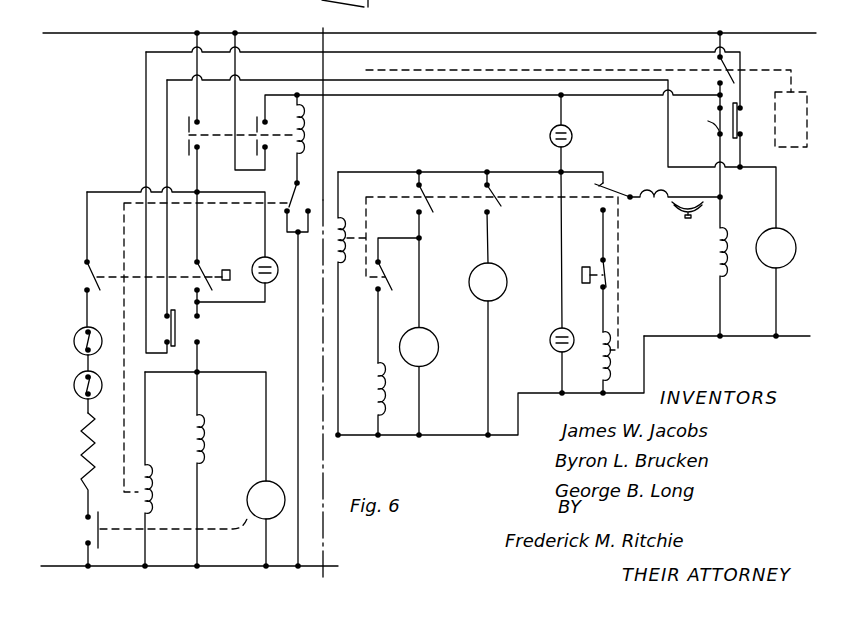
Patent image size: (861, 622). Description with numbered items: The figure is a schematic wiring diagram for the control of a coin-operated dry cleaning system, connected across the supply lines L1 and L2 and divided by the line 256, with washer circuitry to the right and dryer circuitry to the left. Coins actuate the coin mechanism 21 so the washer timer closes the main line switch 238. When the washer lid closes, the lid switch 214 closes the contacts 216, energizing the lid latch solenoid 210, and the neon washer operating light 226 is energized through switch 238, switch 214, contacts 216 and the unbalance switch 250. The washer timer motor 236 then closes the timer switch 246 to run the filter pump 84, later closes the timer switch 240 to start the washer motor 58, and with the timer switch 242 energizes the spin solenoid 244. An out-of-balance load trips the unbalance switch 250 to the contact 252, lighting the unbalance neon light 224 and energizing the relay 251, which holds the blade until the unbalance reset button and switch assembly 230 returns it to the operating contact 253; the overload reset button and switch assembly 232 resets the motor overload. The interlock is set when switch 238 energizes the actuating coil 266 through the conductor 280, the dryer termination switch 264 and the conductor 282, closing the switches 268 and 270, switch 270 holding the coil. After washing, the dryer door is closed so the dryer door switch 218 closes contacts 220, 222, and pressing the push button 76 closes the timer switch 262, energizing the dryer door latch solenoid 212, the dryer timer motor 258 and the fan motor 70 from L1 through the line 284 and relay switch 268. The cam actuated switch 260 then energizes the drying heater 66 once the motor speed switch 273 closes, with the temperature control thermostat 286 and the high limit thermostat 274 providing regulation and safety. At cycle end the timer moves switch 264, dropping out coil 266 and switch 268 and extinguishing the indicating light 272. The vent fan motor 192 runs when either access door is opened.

The supply line L1 is at (777, 31).
The supply line L2 is at (785, 338).
The coin mechanism 21 is at (800, 147).
The washer motor 58 is at (432, 360).
The drying heater 66 is at (82, 418).
The dryer fan motor 70 is at (247, 497).
The push button 76 is at (230, 274).
The filter pump 84 is at (500, 298).
The vent fan motor 192 is at (781, 267).
The lid latch solenoid 210 is at (713, 278).
The dryer door latch solenoid 212 is at (192, 435).
The lid switch 214 is at (738, 118).
The contacts 216 is at (710, 121).
The dryer door switch 218 is at (176, 328).
The contact 220 is at (200, 343).
The contact 222 is at (200, 316).
The unbalance neon light 224 is at (553, 128).
The neon washer operating light 226 is at (553, 352).
The unbalance reset button and switch assembly 230 is at (605, 274).
The overload reset button and switch assembly 232 is at (676, 212).
The timer motor 236 is at (343, 226).
The main line switch 238 is at (724, 66).
The timer switch 240 is at (420, 186).
The timer switch 242 is at (383, 272).
The spin solenoid 244 is at (372, 365).
The timer switch 246 is at (502, 205).
The unbalance switch 250 is at (612, 186).
The relay 251 is at (609, 366).
The contact 252 is at (603, 210).
The operating contact 253 is at (603, 183).
The line 256 is at (321, 29).
The dryer timer motor 258 is at (149, 491).
The cam actuated switch 260 is at (95, 276).
The timer switch 262 is at (200, 268).
The dryer termination switch 264 is at (300, 192).
The actuating coil 266 is at (300, 132).
The relay switch 268 is at (188, 143).
The relay switch 270 is at (257, 124).
The indicating light 272 is at (271, 283).
The motor speed switch 273 is at (97, 523).
The high limit thermostat 274 is at (80, 378).
The conductor 280 is at (417, 96).
The conductor 282 is at (297, 387).
The line 284 is at (196, 62).
The temperature control thermostat 286 is at (85, 331).